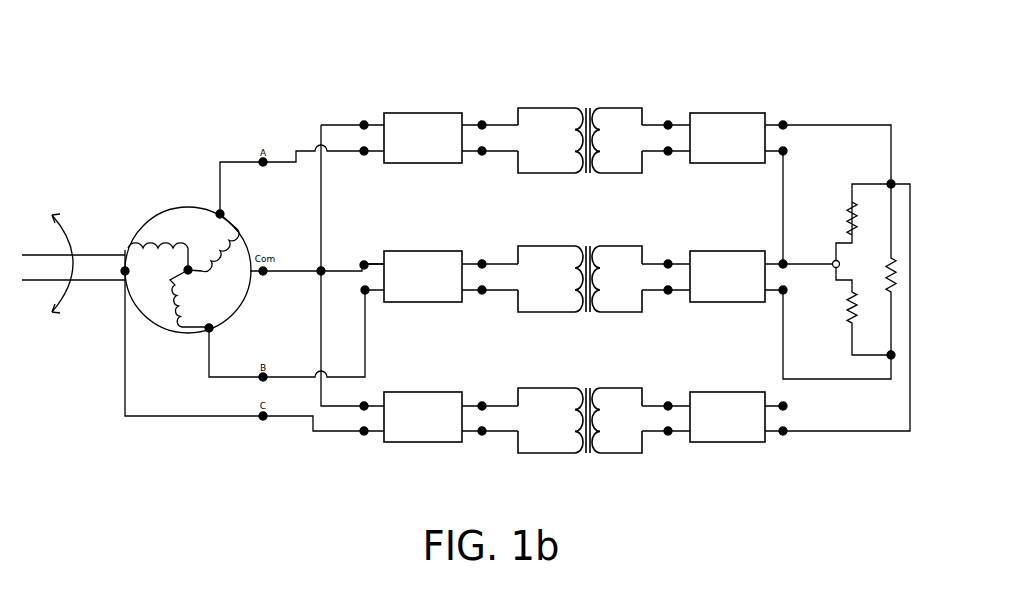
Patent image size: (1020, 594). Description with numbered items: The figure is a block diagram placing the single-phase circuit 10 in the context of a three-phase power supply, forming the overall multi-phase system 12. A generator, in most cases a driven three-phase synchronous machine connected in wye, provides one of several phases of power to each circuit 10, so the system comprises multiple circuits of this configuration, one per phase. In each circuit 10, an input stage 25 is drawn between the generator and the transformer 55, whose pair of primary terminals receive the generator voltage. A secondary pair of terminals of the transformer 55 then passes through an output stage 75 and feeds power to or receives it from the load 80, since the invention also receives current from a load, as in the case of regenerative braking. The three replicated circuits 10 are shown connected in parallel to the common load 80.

The circuit 10 is at (537, 92).
The multi-phase power conversion system 12 is at (697, 43).
The input rectifier stage 25 is at (441, 133).
The transformer 55 is at (555, 133).
The output stage 75 is at (743, 133).
The load 80 is at (869, 273).